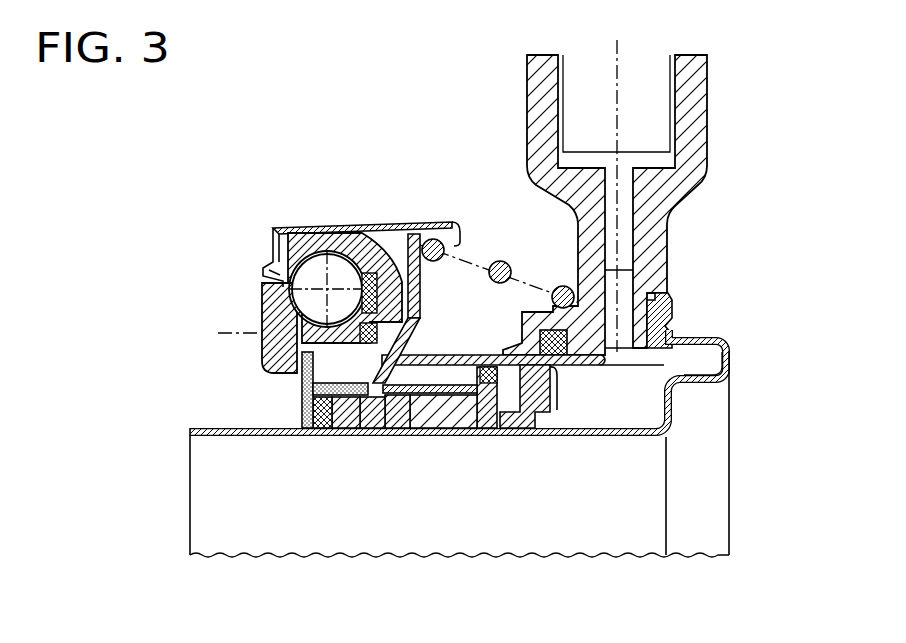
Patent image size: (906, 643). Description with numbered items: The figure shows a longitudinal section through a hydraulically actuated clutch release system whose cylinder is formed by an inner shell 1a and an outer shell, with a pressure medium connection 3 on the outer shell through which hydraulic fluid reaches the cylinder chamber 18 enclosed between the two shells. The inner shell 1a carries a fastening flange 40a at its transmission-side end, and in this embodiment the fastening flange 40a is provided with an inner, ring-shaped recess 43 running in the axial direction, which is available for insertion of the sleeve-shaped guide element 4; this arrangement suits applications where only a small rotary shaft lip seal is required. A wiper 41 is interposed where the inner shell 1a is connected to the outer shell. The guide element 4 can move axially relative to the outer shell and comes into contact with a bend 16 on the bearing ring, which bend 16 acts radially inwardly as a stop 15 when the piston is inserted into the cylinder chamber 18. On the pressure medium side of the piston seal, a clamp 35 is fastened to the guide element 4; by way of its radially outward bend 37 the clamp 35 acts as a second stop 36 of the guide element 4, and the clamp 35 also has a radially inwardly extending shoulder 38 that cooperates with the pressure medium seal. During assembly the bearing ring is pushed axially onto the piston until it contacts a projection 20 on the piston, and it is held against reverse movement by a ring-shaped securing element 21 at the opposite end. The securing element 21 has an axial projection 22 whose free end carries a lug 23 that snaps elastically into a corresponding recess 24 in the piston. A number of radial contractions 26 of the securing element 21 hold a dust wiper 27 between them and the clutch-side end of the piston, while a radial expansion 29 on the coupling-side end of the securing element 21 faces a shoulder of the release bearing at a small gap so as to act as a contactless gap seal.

The pressure medium connection 3 is at (693, 118).
The wiper 41 is at (672, 313).
The fastening flange 40a is at (712, 337).
The ring-shaped recess 43 is at (707, 365).
The inner shell 1a is at (224, 437).
The cylinder chamber 18 is at (625, 413).
The clamp 35 is at (610, 380).
The radially outward bend 37 is at (617, 357).
The guide element 4 is at (435, 355).
The second stop 36 is at (582, 370).
The shoulder 38 is at (559, 407).
The projection 20 is at (495, 407).
The bend 16 is at (402, 400).
The recess 24 is at (392, 397).
The lug 23 is at (370, 400).
The axial projection 22 is at (343, 400).
The wiper 27 is at (316, 394).
The radial expansion 29 is at (300, 383).
The radial contractions 26 is at (307, 387).
The stop 15 is at (432, 400).
The securing element 21 is at (287, 393).